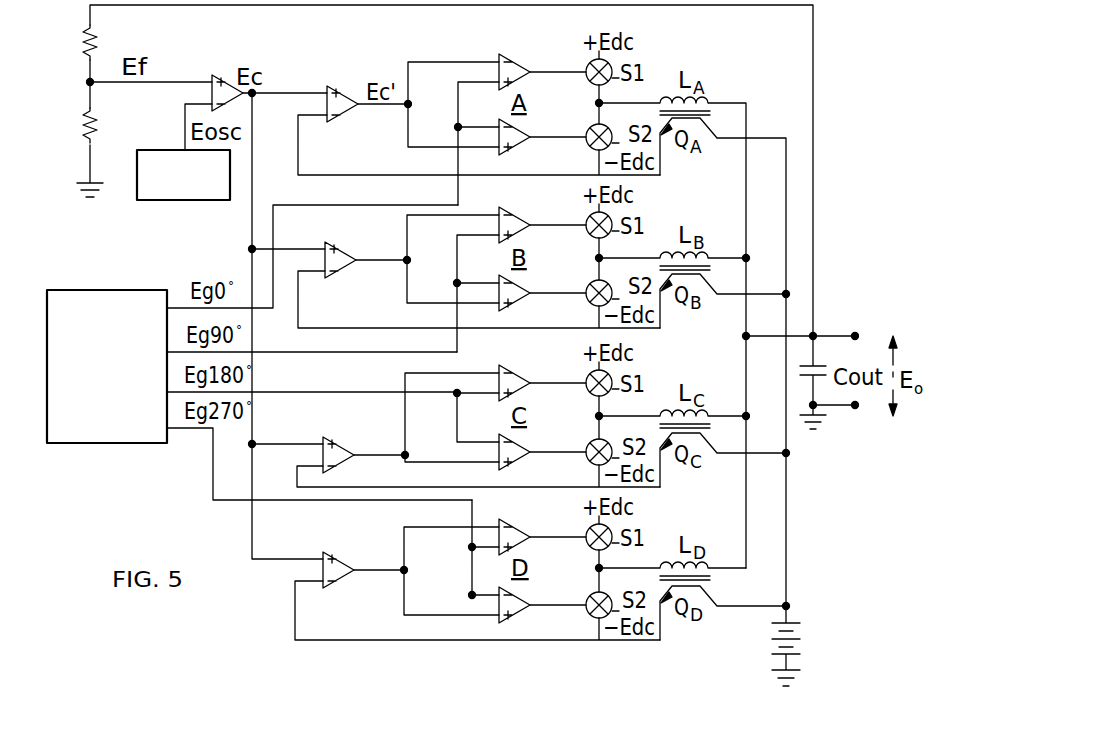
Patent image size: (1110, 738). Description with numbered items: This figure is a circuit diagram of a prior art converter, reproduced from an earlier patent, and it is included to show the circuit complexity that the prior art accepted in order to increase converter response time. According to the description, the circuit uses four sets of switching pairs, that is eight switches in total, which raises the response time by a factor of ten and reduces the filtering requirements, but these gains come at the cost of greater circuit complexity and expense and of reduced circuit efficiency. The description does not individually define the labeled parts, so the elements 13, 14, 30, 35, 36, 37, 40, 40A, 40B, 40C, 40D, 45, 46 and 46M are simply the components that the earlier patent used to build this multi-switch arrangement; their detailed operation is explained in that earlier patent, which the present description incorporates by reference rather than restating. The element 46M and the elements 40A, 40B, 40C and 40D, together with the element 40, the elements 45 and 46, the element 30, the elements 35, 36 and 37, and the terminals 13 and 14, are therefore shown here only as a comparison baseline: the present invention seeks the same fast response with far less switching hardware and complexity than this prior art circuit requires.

The output terminal 13 is at (855, 333).
The output terminal 14 is at (852, 409).
The switch junction node 30 is at (599, 103).
The 400 Hz oscillator 35 is at (176, 200).
The resistor 36 is at (103, 38).
The resistor 37 is at (103, 120).
The error amplifier 40 is at (229, 76).
The amplifier 40A is at (344, 79).
The amplifier 40B is at (342, 235).
The amplifier 40C is at (340, 430).
The amplifier 40D is at (340, 545).
The comparator 45 is at (521, 49).
The comparator 46 is at (514, 150).
The multi-phase 60 KHz generator 46M is at (130, 290).